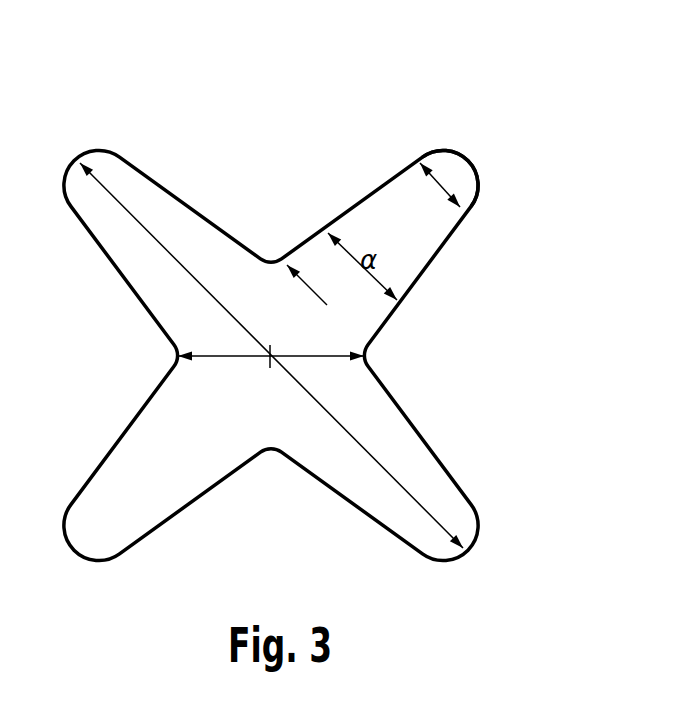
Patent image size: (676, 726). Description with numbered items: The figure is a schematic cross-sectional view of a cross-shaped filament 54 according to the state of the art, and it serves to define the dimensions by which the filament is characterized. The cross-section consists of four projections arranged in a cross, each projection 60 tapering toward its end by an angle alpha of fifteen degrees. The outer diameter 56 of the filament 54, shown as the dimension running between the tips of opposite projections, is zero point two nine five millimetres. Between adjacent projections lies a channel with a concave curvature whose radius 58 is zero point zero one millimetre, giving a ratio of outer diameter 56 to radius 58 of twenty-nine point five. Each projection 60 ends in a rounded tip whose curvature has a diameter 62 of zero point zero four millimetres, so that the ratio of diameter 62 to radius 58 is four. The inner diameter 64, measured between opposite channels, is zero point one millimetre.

The cross-shaped filament 54 is at (174, 130).
The outer diameter 56 is at (413, 497).
The radius of the concave curvature of the channel 58 is at (326, 297).
The rounded arm end 60 is at (452, 146).
The diameter of the curvature of the projection 62 is at (442, 183).
The inner diameter 64 is at (221, 362).